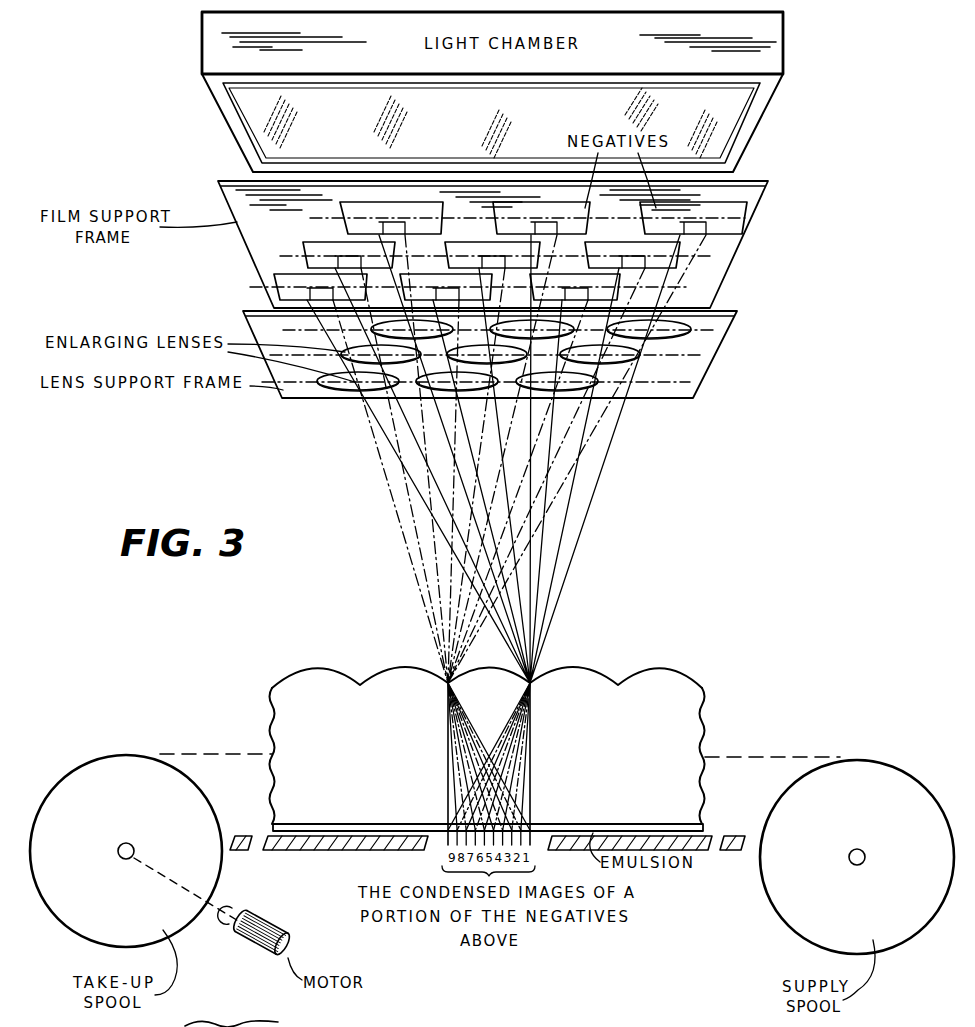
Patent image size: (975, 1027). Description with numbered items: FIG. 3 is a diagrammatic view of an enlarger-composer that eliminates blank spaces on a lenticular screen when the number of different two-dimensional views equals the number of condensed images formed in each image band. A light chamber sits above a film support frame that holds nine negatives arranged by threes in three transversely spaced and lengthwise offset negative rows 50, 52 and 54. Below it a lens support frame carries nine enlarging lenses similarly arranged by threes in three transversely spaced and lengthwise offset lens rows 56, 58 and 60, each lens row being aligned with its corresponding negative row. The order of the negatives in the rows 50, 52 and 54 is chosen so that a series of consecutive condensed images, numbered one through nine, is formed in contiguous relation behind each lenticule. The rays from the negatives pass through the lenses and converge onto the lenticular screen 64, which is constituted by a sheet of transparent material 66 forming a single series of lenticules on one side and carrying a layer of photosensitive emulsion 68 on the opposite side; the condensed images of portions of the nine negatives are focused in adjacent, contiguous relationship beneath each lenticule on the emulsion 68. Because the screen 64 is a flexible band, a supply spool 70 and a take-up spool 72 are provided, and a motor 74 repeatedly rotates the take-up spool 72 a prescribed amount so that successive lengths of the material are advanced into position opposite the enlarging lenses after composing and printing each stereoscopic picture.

The negative row 50 is at (680, 388).
The negative row 52 is at (718, 360).
The negative row 54 is at (733, 334).
The enlarging lens row 56 is at (700, 292).
The enlarging lens row 58 is at (745, 258).
The enlarging lens row 60 is at (757, 218).
The lenticular screen 64 is at (706, 670).
The sheet of transparent material 66 is at (677, 768).
The layer of photosensitive emulsion 68 is at (688, 830).
The supply spool 70 is at (903, 834).
The take-up spool 72 is at (172, 828).
The motor 74 is at (278, 926).